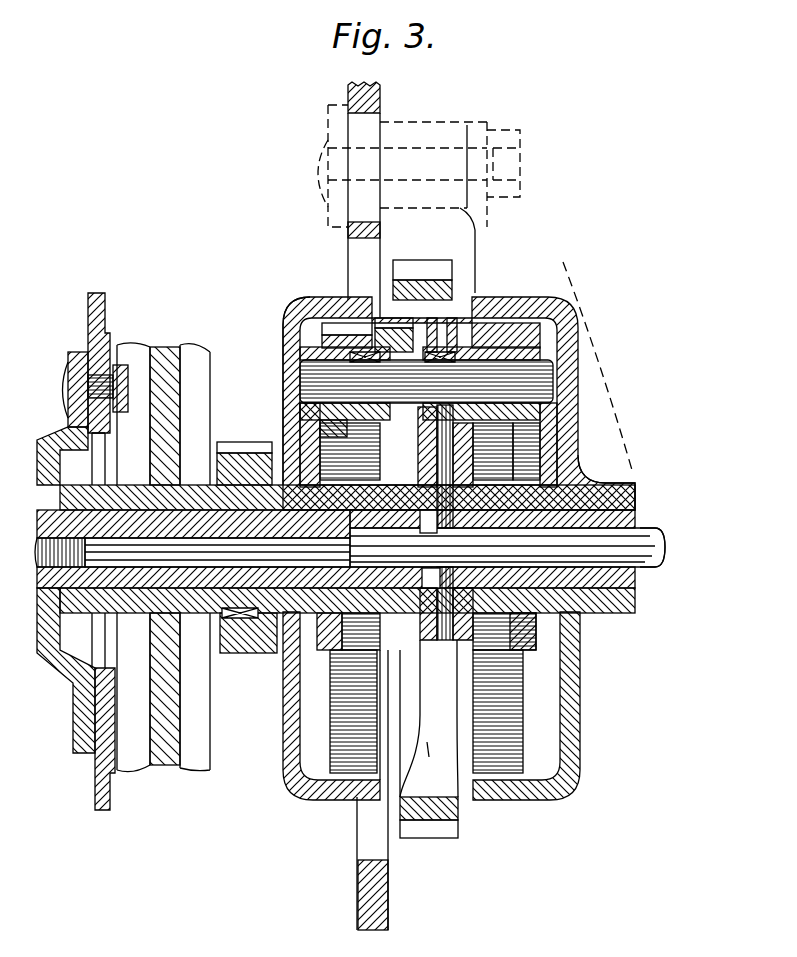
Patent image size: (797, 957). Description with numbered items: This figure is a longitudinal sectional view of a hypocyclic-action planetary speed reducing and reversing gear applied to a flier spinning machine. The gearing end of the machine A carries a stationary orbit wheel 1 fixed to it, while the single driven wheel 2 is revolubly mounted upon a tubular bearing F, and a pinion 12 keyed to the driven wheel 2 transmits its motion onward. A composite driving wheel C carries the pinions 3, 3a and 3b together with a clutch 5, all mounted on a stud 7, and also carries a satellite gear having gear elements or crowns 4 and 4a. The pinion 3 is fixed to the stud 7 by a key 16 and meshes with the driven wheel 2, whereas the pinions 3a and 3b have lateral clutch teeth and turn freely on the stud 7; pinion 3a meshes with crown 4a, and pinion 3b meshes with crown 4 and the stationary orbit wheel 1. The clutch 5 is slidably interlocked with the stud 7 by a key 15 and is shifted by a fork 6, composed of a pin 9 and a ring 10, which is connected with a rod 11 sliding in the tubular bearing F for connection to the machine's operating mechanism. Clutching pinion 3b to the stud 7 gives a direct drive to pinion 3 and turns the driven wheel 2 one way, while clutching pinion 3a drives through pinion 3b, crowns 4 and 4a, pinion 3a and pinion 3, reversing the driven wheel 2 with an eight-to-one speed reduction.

The stationary orbit wheel 1 is at (558, 315).
The driven wheel 2 is at (285, 335).
The pinion 3 is at (350, 325).
The pinion 3a is at (410, 325).
The pinion 3b is at (550, 280).
The gear element or crown 4 is at (505, 452).
The gear element or crown 4a is at (405, 458).
The clutch 5 is at (432, 340).
The fork 6 is at (475, 468).
The stud 7 is at (528, 380).
The pin 9 is at (600, 513).
The ring 10 is at (600, 468).
The rod 11 is at (630, 556).
The pinion 12 is at (258, 450).
The key 15 is at (500, 292).
The key 16 is at (325, 325).
The gearing end of the machine A is at (107, 317).
The composite driving wheel C is at (447, 820).
The tubular bearing F is at (623, 613).